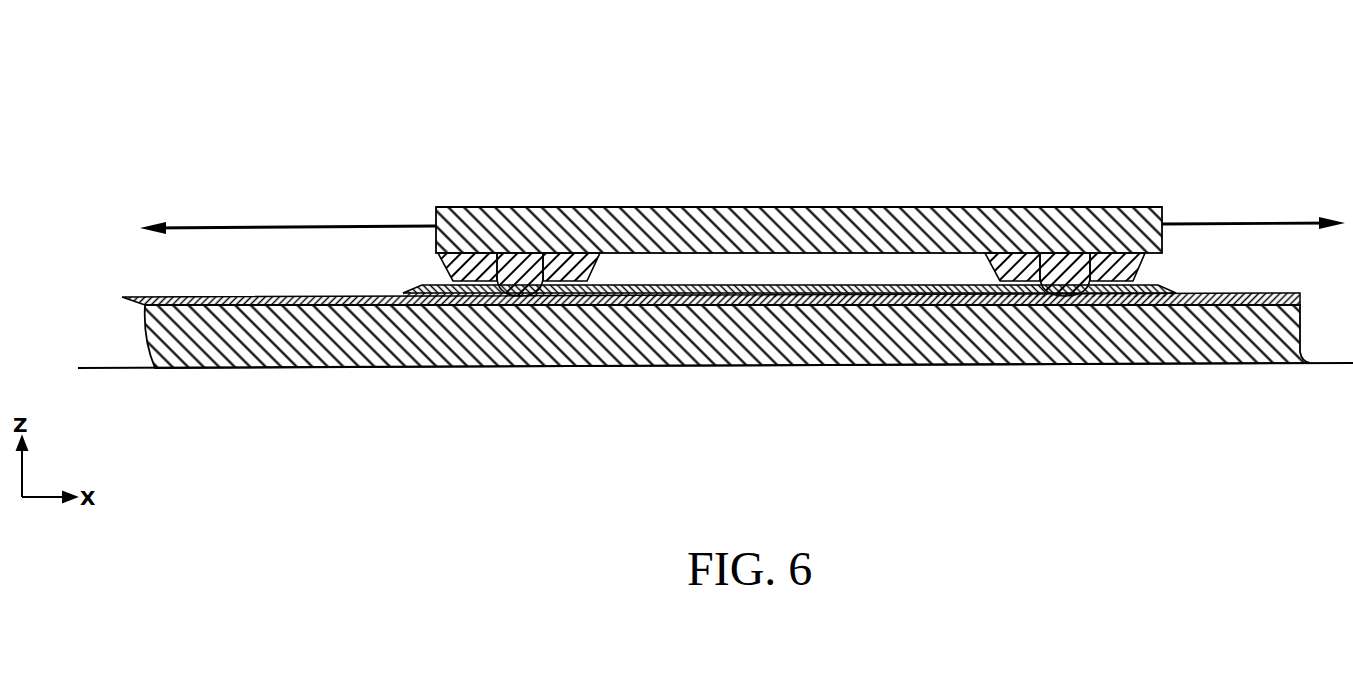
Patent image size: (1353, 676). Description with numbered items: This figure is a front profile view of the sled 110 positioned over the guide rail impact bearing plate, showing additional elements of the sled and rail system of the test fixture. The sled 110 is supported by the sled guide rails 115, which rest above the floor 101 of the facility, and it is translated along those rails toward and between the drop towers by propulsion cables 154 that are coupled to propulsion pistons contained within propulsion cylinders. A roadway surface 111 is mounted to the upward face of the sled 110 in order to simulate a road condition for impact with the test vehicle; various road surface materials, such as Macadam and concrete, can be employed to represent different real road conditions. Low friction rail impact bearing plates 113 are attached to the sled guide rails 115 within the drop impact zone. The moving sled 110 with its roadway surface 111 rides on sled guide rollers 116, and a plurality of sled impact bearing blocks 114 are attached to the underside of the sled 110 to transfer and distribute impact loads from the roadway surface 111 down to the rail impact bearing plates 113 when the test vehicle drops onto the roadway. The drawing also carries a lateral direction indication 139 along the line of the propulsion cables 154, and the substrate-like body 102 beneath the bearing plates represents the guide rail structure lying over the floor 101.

The floor 101 is at (118, 369).
The substrate 102 is at (326, 350).
The sled 110 is at (797, 205).
The roadway surface 111 is at (849, 205).
The rail impact bearing plates 113 is at (612, 296).
The sled impact bearing blocks 114 is at (1000, 250).
The sled guide rails 115 is at (248, 297).
The sled guide rollers 116 is at (515, 270).
The lateral direction arrow 139 is at (192, 227).
The propulsion cables 154 is at (1188, 223).